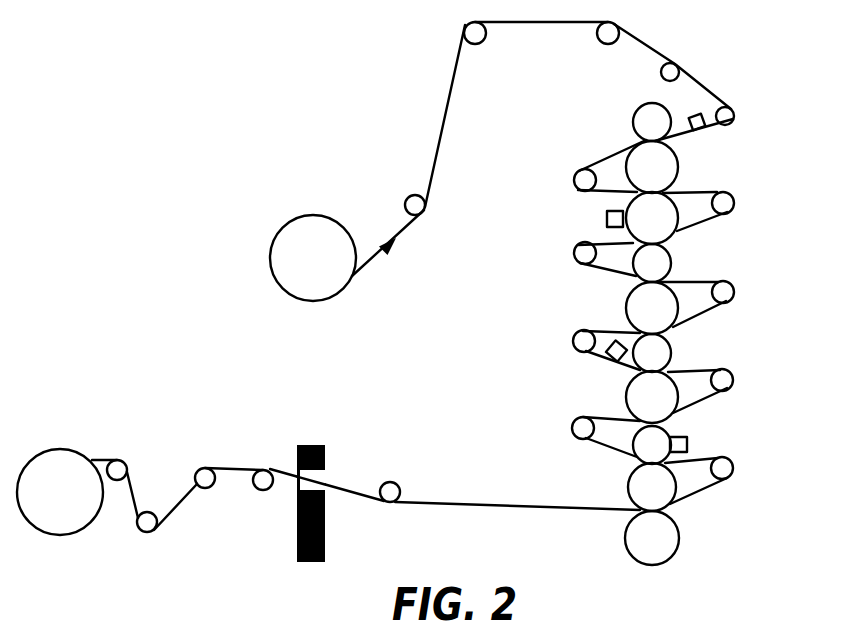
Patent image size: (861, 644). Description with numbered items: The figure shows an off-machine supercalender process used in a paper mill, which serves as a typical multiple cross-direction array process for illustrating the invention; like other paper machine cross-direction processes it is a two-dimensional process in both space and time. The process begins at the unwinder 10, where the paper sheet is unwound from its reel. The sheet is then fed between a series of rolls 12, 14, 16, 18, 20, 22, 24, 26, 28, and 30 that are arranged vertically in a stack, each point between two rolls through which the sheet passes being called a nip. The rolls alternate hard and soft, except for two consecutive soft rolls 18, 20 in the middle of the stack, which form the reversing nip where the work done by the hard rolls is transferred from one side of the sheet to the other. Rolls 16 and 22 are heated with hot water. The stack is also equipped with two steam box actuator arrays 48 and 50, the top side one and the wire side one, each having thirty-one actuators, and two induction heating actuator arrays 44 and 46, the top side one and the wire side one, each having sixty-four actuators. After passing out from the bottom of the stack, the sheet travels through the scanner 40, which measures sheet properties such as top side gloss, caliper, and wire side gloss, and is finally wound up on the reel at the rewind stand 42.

The unwinder 10 is at (270, 260).
The roll 12 is at (632, 120).
The roll 14 is at (680, 163).
The roll 16 is at (680, 221).
The soft roll 18 is at (670, 263).
The soft roll 20 is at (677, 303).
The roll 22 is at (670, 355).
The roll 24 is at (677, 400).
The roll 26 is at (625, 451).
The roll 28 is at (675, 490).
The roll 30 is at (678, 543).
The scanner 40 is at (327, 445).
The rewind stand 42 is at (67, 447).
The induction heating actuator array 44 is at (607, 220).
The induction heating actuator array 46 is at (688, 442).
The steam box actuator array 48 is at (712, 118).
The steam box actuator array 50 is at (590, 352).